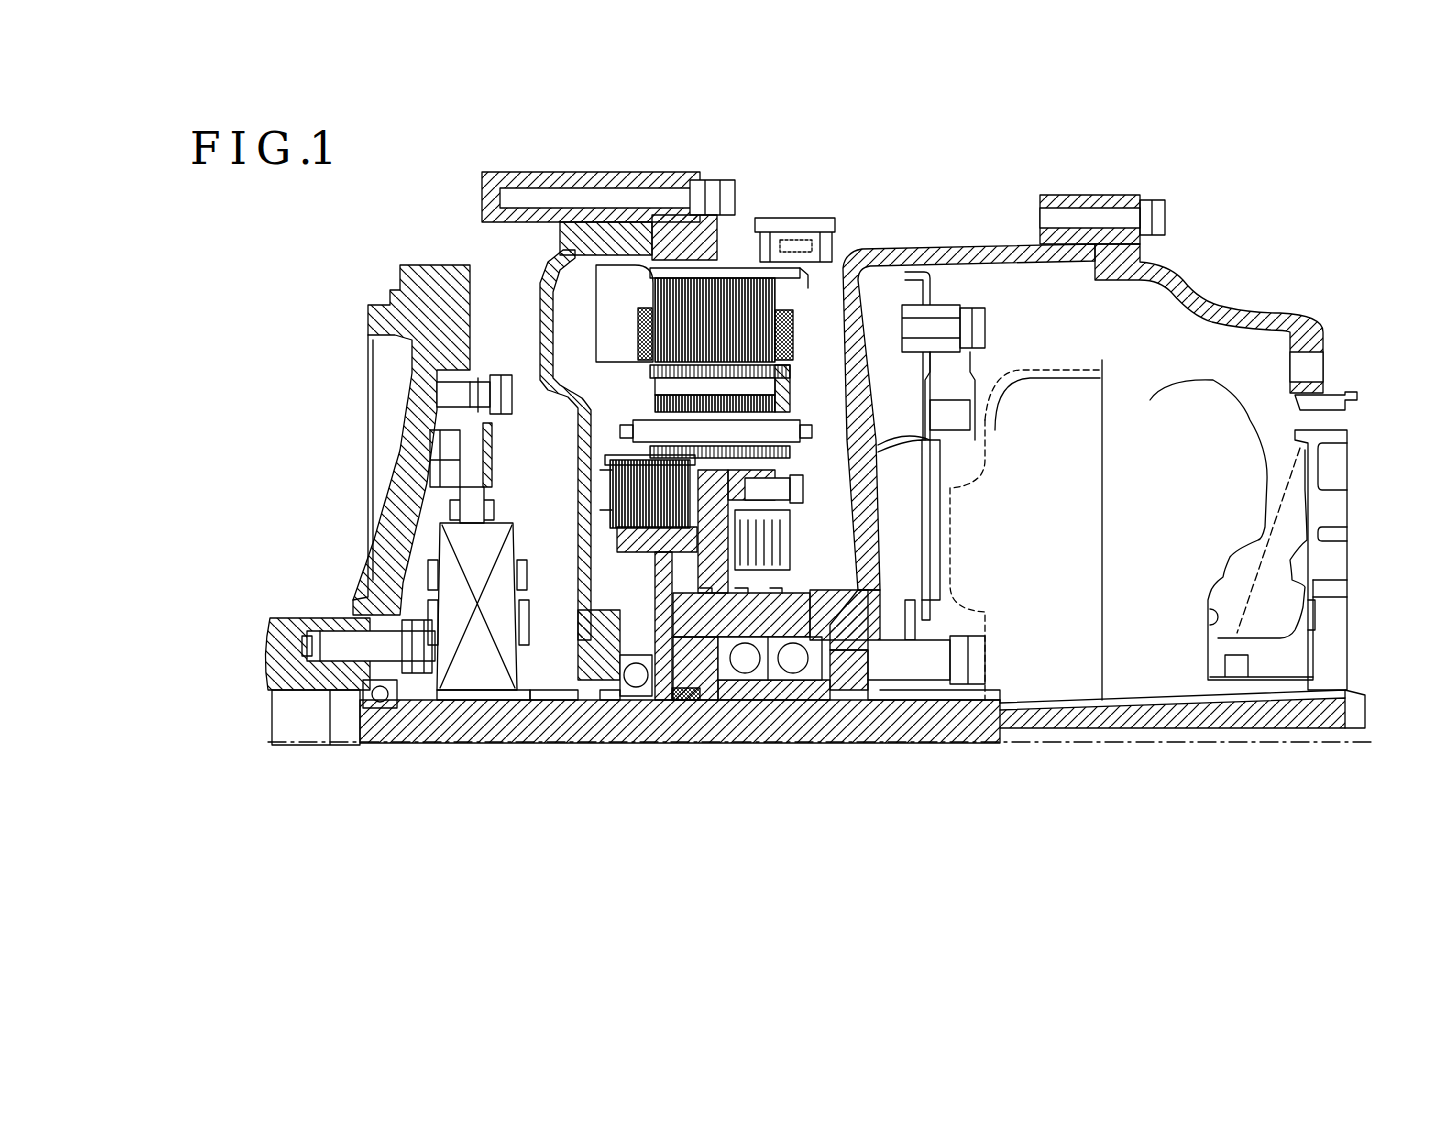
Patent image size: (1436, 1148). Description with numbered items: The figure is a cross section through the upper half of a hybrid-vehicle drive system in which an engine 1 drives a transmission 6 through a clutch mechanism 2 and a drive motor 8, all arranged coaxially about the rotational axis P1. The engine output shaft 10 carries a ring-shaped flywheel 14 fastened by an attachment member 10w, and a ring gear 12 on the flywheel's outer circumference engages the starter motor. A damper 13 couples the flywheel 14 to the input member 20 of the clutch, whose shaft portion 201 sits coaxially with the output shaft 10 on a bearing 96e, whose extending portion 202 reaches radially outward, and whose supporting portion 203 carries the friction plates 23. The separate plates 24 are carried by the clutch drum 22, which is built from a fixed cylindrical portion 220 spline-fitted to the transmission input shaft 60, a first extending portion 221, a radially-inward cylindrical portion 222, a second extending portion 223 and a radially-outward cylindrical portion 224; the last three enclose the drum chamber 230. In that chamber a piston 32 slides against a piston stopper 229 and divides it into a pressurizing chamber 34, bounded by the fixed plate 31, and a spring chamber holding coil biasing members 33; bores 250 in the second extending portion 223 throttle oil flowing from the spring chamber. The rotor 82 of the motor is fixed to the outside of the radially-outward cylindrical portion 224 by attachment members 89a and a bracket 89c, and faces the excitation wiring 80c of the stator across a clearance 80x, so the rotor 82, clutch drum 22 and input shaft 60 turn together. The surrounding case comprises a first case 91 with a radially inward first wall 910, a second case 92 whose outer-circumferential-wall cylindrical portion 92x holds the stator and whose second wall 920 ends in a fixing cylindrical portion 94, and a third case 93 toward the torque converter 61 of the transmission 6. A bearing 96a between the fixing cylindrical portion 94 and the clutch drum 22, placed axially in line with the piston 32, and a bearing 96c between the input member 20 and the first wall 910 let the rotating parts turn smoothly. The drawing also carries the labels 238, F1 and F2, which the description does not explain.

The engine 1 is at (250, 667).
The clutch mechanism 2 is at (512, 748).
The transmission 6 is at (1370, 648).
The drive motor 8 is at (725, 300).
The output shaft 10 is at (280, 618).
The attachment member 10w is at (330, 640).
The ring gear 12 is at (400, 264).
The damper 13 is at (482, 540).
The flywheel 14 is at (437, 394).
The input member 20 is at (410, 745).
The clutch drum 22 is at (732, 746).
The friction plates 23 is at (625, 513).
The separate plates 24 is at (640, 452).
The fixed plate 31 is at (655, 568).
The piston 32 is at (760, 500).
The biasing members 33 is at (775, 530).
The pressurizing chamber 34 is at (702, 746).
The input shaft 60 is at (810, 746).
The torque converter 61 is at (1075, 405).
The excitation wiring 80c is at (645, 335).
The clearance 80x is at (786, 372).
The rotor 82 is at (788, 404).
The attachment members 89a is at (820, 490).
The bracket 89c is at (815, 440).
The first case 91 is at (575, 172).
The second case 92 is at (882, 252).
The outer-circumferential-wall cylindrical portion 92x is at (745, 265).
The third case 93 is at (1195, 280).
The fixing cylindrical portion 94 is at (968, 622).
The bearing 96a is at (828, 692).
The bearing 96c is at (632, 702).
The bearing 96e is at (372, 710).
The shaft portion 201 is at (445, 745).
The extending portion 202 is at (585, 625).
The supporting portion 203 is at (600, 550).
The fixed cylindrical portion 220 is at (755, 746).
The first extending portion 221 is at (680, 746).
The radially-inward cylindrical portion 222 is at (778, 746).
The second extending portion 223 is at (865, 552).
The radially-outward cylindrical portion 224 is at (850, 448).
The piston stopper 229 is at (880, 470).
The drum chamber 230 is at (875, 582).
The spline 238 is at (600, 478).
The bores 250 is at (860, 522).
The first wall 910 is at (540, 345).
The second wall 920 is at (870, 330).
The force direction F1 is at (863, 796).
The force direction F2 is at (845, 846).
The rotational axis P1 is at (305, 745).